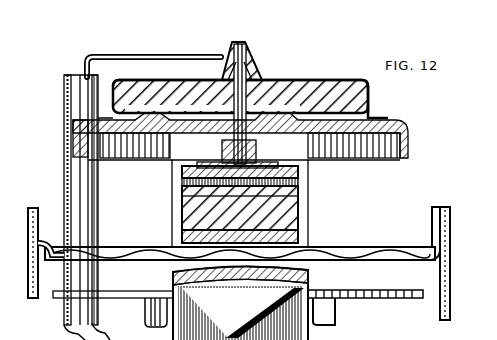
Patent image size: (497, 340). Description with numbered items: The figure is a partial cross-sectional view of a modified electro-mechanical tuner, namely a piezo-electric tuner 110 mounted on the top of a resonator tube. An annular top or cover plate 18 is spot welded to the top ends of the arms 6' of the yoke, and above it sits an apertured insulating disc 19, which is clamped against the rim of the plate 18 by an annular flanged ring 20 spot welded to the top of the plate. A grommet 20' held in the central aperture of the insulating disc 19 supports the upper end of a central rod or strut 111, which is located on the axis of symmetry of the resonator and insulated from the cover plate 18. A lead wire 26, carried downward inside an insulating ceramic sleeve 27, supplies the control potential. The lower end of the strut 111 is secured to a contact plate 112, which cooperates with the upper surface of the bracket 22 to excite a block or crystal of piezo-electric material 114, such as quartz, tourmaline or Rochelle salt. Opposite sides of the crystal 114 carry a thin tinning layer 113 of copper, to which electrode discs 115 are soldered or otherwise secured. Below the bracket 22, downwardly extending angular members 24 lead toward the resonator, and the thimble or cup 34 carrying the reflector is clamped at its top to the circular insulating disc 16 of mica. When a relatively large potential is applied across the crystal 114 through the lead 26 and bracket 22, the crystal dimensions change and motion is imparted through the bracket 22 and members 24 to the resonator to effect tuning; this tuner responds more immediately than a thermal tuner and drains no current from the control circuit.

The lead wire 26 is at (165, 51).
The grommet 20' is at (250, 101).
The central rod or strut 111 is at (234, 85).
The apertured insulating disc 19 is at (305, 92).
The annular flanged ring 20 is at (256, 96).
The annular top plate 18 is at (408, 138).
The insulating ceramic sleeve 27 is at (68, 172).
The electrode discs 115 is at (182, 173).
The block or crystal of piezo-electric material 114 is at (182, 190).
The arms of yoke 6' is at (240, 250).
The contact plate 112 is at (298, 170).
The tinning layer 113 is at (298, 182).
The piezo-electric tuner 110 is at (298, 206).
The bracket 22 is at (372, 250).
The circular insulating disc or plate 16 is at (378, 290).
The angular members 24 is at (451, 312).
The thimble or cup 34 is at (150, 312).